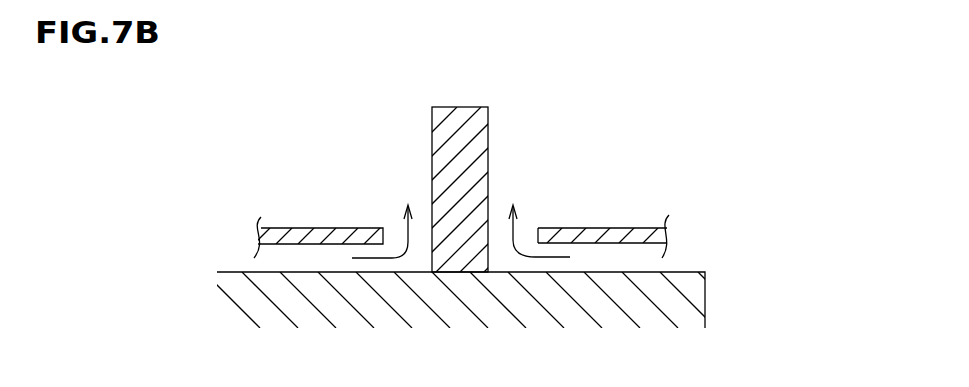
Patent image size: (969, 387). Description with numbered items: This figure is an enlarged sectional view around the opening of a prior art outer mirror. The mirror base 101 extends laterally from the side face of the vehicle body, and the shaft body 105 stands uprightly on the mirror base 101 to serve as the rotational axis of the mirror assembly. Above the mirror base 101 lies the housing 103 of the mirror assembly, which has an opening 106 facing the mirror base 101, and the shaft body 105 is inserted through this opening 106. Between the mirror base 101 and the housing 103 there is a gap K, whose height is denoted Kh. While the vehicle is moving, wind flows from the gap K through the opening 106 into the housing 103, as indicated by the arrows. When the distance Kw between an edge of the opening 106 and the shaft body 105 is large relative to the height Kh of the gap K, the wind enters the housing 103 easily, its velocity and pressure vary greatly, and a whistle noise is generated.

The mirror base 101 is at (705, 298).
The housing 103 is at (623, 228).
The shaft body 105 is at (489, 114).
The opening 106 is at (538, 232).
The gap K is at (708, 259).
The distance Kw is at (384, 224).
The height Kh is at (258, 244).